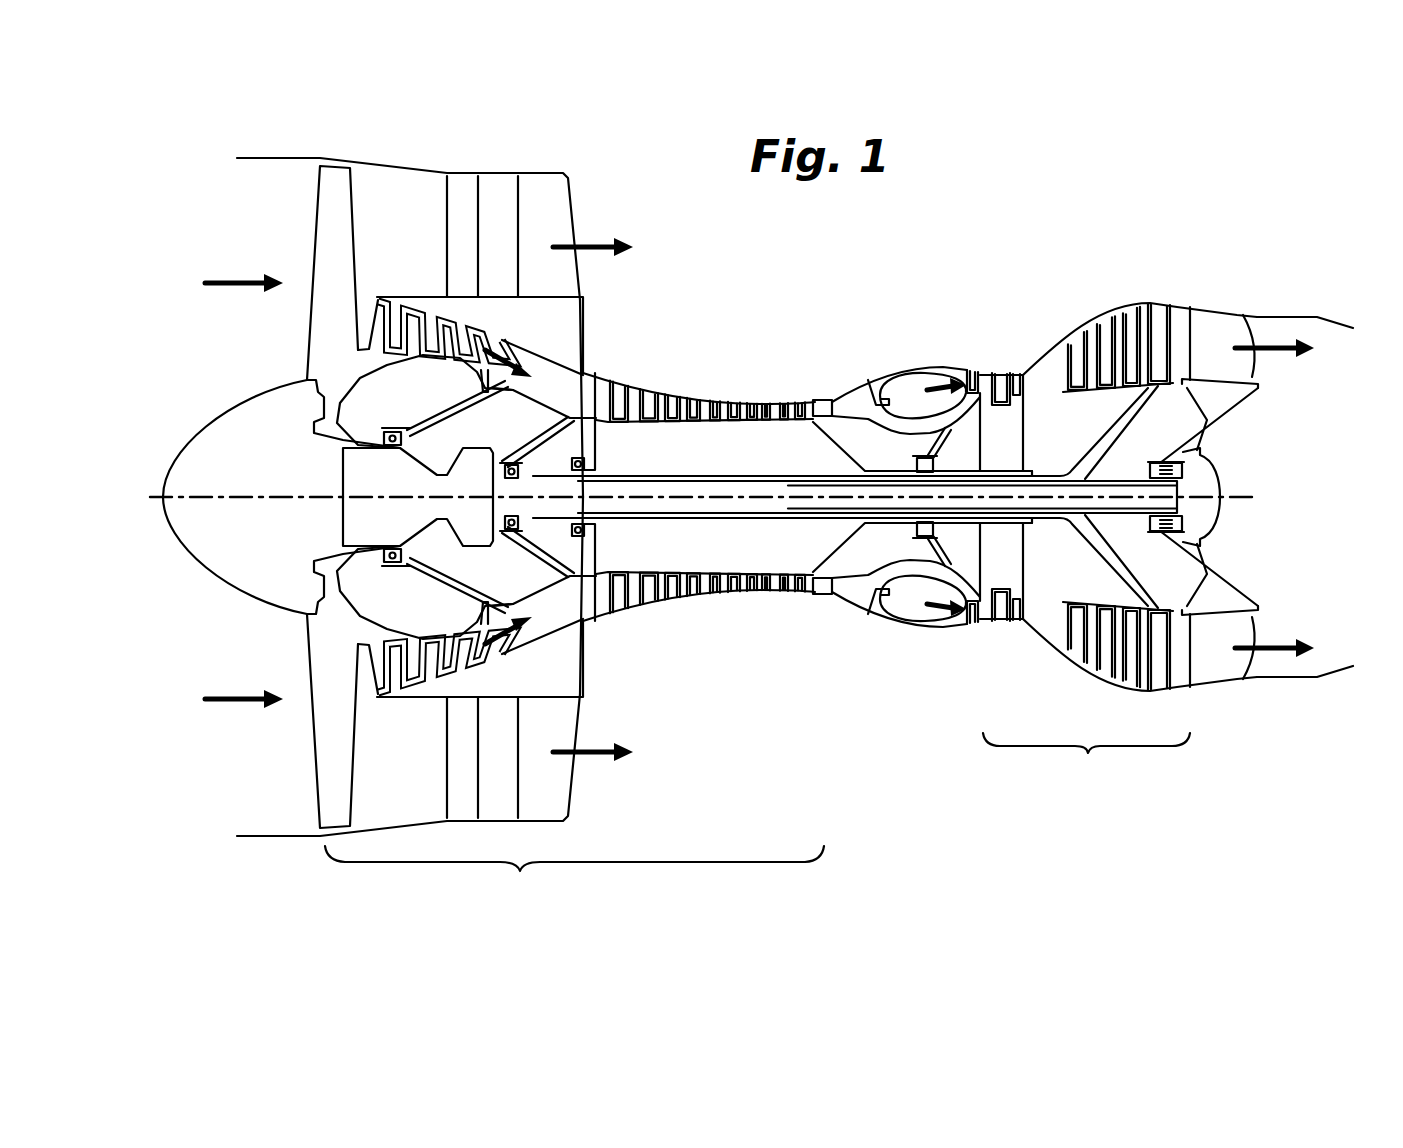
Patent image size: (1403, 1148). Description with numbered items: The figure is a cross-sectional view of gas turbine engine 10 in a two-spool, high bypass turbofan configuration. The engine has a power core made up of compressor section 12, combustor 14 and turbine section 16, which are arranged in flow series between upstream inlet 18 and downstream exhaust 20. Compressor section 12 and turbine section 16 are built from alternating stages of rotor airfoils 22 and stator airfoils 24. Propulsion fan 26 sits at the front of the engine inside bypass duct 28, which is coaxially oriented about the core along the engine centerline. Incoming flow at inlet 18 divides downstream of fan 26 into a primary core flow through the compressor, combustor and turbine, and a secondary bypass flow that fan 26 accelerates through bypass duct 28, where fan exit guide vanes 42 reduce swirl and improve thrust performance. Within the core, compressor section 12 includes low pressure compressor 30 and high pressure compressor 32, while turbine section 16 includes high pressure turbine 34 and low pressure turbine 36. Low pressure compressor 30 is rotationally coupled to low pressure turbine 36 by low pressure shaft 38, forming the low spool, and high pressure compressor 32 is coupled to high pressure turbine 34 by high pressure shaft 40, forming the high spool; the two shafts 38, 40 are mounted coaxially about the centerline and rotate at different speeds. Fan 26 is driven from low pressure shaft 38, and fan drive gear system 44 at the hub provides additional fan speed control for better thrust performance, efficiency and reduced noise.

The gas turbine engine 10 is at (739, 482).
The compressor section 12 is at (493, 515).
The combustor 14 is at (925, 370).
The turbine section 16 is at (1118, 544).
The inlet 18 is at (224, 375).
The exhaust 20 is at (1302, 449).
The rotor airfoils 22 is at (637, 395).
The stator airfoils 24 is at (675, 395).
The propulsion fan 26 is at (330, 245).
The bypass duct 28 is at (422, 245).
The low pressure compressor 30 is at (527, 655).
The high pressure compressor 32 is at (728, 602).
The high pressure turbine 34 is at (1004, 633).
The low pressure turbine 36 is at (1083, 671).
The low pressure shaft 38 is at (752, 512).
The high pressure shaft 40 is at (836, 528).
The fan exit guide vanes 42 is at (457, 190).
The fan drive gear system 44 is at (478, 452).